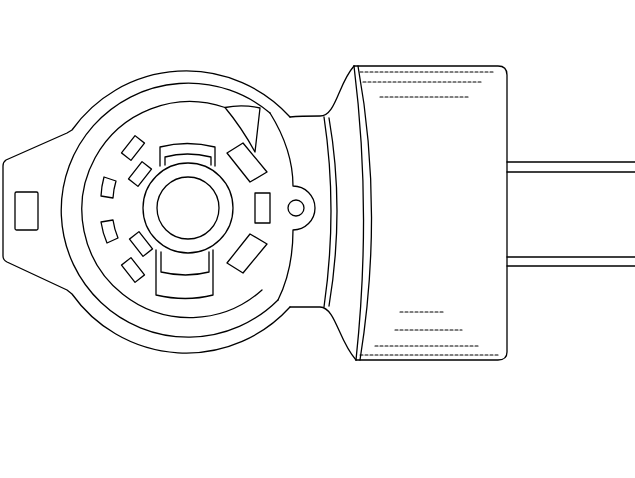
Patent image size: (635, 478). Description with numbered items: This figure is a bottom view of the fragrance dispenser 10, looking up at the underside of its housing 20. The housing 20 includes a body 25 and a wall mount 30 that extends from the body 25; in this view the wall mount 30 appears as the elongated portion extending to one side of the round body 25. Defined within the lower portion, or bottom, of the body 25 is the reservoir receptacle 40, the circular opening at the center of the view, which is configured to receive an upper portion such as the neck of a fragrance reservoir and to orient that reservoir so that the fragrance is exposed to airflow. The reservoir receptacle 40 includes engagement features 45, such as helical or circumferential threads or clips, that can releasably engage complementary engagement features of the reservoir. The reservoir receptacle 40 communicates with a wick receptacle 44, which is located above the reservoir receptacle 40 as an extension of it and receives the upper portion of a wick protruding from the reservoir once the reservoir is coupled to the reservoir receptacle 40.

The fragrance dispenser 10 is at (88, 73).
The housing 20 is at (285, 42).
The body 25 is at (228, 78).
The wall mount 30 is at (390, 95).
The reservoir receptacle 40 is at (175, 215).
The wick receptacle 44 is at (212, 233).
The engagement features 45 is at (242, 254).